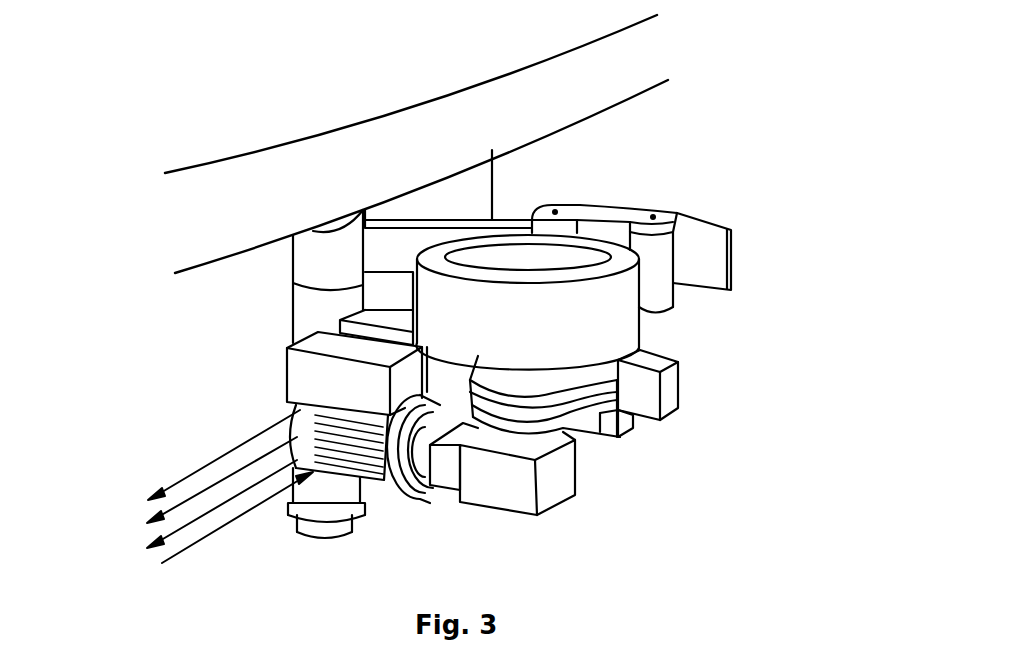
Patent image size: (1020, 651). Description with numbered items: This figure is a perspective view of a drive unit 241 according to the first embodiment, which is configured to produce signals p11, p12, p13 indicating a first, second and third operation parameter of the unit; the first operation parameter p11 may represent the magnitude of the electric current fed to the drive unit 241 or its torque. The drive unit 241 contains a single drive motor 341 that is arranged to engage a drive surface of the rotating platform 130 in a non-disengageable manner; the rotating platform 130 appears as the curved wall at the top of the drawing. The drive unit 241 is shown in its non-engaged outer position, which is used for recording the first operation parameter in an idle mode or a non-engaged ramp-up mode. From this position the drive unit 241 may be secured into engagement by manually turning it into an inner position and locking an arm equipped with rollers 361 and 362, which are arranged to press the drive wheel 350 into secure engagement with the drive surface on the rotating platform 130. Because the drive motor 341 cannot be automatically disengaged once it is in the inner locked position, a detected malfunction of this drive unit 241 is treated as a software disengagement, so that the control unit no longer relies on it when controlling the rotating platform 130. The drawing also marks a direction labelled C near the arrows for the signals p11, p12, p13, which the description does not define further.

The rotating platform 130 is at (175, 225).
The drive unit 241 is at (708, 157).
The drive motor 341 is at (367, 478).
The drive wheel 350 is at (617, 325).
The roller 361 is at (562, 233).
The roller 362 is at (658, 250).
The signal indicating first operation parameter p11 is at (196, 462).
The signal indicating second operation parameter p12 is at (195, 488).
The signal indicating third operation parameter p13 is at (195, 512).
The arrow C direction C is at (234, 534).